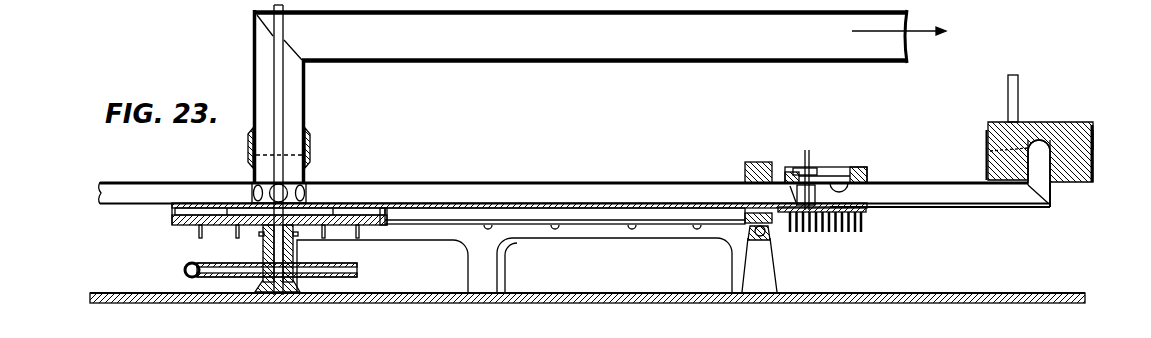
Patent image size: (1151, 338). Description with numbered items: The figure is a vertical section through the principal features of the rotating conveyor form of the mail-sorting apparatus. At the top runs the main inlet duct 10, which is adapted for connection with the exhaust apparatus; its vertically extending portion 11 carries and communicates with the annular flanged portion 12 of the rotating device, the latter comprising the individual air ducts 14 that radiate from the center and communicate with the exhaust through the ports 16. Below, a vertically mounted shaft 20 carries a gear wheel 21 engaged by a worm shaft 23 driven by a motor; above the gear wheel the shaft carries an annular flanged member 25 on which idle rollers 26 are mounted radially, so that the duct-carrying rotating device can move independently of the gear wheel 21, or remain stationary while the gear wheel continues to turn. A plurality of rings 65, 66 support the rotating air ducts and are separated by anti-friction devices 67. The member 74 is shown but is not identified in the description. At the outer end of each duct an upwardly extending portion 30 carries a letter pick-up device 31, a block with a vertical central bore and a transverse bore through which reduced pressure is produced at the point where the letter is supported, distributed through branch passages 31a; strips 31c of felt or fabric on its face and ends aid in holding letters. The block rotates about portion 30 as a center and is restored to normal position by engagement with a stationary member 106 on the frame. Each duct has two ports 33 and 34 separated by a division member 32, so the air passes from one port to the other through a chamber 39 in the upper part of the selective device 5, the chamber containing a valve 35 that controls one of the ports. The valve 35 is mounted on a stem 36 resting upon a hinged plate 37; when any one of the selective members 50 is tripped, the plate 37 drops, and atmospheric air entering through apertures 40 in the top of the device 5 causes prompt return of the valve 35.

The selective device 5 is at (776, 168).
The main inlet duct 10 is at (548, 63).
The vertically extending portion 11 is at (253, 99).
The annular flanged portion 12 is at (250, 167).
The air ducts 14 is at (140, 182).
The ports 16 is at (252, 194).
The shaft 20 is at (272, 298).
The gear wheel 21 is at (349, 268).
The worm shaft 23 is at (187, 264).
The annular flanged member 25 is at (326, 231).
The idle rollers 26 is at (372, 213).
The upwardly extending portion 30 is at (1094, 167).
The letter pick-up device 31 is at (1038, 147).
The branch passages 31a is at (993, 148).
The strips of felt or fabric 31c is at (1094, 140).
The division member 32 is at (830, 197).
The port 33 is at (797, 193).
The port 34 is at (865, 173).
The valve 35 is at (814, 171).
The stem 36 is at (812, 166).
The hinged plate 37 is at (866, 212).
The chamber 39 is at (842, 168).
The apertures 40 is at (805, 158).
The selective members 50 is at (790, 214).
The ring 65 is at (606, 216).
The ring 66 is at (673, 240).
The anti-friction devices 67 is at (631, 226).
The plate 74 is at (233, 232).
The stationary member 106 is at (1010, 93).